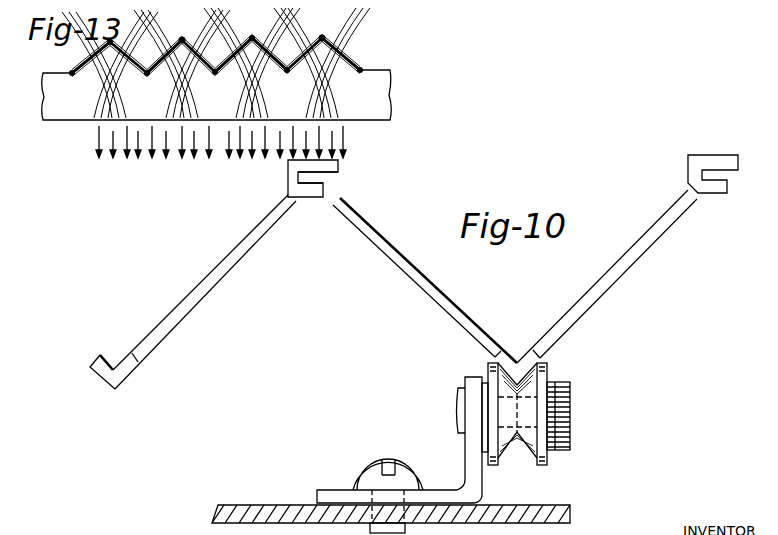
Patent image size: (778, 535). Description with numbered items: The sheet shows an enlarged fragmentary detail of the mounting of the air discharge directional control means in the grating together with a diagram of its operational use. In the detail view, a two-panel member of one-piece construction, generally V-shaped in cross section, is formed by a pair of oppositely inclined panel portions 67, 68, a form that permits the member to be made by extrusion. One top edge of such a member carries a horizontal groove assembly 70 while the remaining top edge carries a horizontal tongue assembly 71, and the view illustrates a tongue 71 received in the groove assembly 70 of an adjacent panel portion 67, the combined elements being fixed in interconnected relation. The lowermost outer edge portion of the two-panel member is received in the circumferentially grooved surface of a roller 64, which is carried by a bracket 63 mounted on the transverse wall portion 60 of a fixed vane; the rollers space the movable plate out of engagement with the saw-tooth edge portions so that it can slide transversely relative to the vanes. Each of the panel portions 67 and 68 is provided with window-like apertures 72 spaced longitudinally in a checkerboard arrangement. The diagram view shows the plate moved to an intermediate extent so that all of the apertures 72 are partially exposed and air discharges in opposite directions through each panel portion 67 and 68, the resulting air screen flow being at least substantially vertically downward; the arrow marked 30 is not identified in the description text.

In FIG. 13, the reflector assembly 30 is at (363, 54).
In FIG. 13, the panel portion 67 is at (93, 54).
In FIG. 10, the panel portion 67 is at (198, 284).
In FIG. 13, the panel portion 68 is at (180, 37).
In FIG. 10, the panel portion 68 is at (406, 250).
In FIG. 13, the apertures 72 is at (174, 43).
In FIG. 10, the horizontal groove assembly 70 is at (299, 166).
In FIG. 10, the horizontal tongue assembly 71 is at (320, 178).
In FIG. 10, the transverse wall portion 60 is at (265, 510).
In FIG. 10, the bracket 63 is at (479, 480).
In FIG. 10, the roller 64 is at (542, 462).